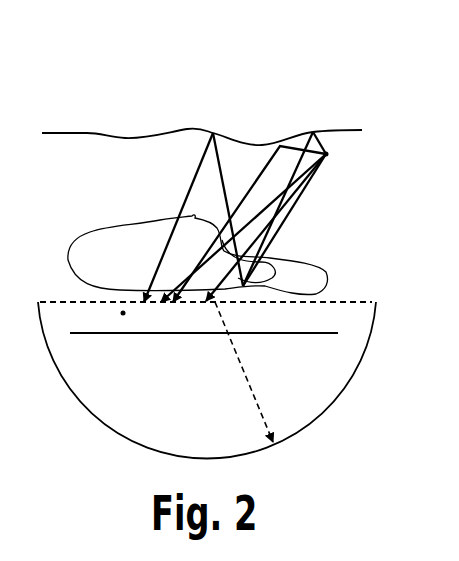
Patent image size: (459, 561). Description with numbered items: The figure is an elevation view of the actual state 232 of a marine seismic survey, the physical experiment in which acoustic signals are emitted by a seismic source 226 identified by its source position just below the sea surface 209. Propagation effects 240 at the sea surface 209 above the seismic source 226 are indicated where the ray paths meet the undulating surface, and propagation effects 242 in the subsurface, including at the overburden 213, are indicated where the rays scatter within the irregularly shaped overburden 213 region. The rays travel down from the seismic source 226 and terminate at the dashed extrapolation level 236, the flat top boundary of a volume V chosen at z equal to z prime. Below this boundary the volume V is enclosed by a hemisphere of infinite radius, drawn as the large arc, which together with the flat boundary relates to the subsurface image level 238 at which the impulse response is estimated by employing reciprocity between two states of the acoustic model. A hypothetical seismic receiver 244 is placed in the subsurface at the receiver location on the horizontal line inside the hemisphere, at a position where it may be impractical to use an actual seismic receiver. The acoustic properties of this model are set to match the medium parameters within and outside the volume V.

The actual state 232 is at (101, 82).
The sea surface 209 is at (60, 132).
The propagation effects 240 is at (310, 116).
The seismic source 226 is at (331, 156).
The propagation effects 242 is at (236, 238).
The overburden 213 is at (72, 250).
The extrapolation level 236 is at (397, 286).
The subsurface image level 238 is at (59, 362).
The hypothetical seismic receiver 244 is at (122, 318).